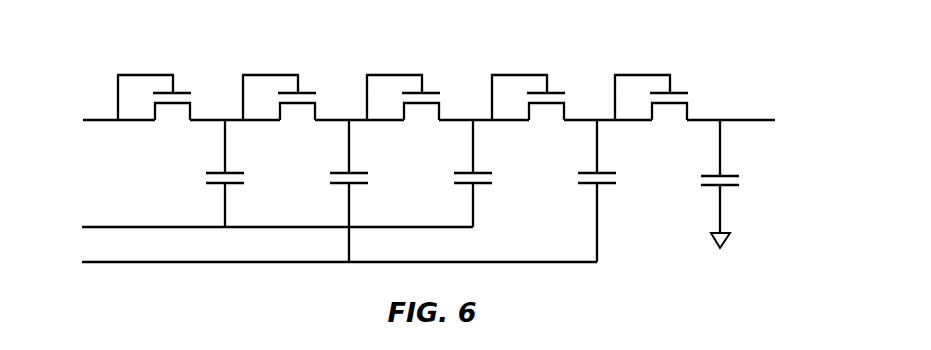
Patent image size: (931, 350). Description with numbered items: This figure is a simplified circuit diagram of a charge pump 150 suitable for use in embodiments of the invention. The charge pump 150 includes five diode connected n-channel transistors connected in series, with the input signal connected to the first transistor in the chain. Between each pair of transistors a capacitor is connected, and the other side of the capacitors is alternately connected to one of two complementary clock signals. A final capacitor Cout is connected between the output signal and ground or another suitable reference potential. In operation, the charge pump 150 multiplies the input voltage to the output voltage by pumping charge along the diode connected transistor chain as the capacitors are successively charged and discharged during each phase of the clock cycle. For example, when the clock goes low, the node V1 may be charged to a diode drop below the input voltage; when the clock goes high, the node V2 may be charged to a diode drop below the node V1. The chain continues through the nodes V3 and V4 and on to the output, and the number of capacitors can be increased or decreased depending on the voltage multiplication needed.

The charge pump 150 is at (152, 53).
The element V1 is at (279, 86).
The element V2 is at (403, 86).
The element V3 is at (528, 86).
The element V4 is at (651, 86).
The final capacitor Cout is at (742, 184).